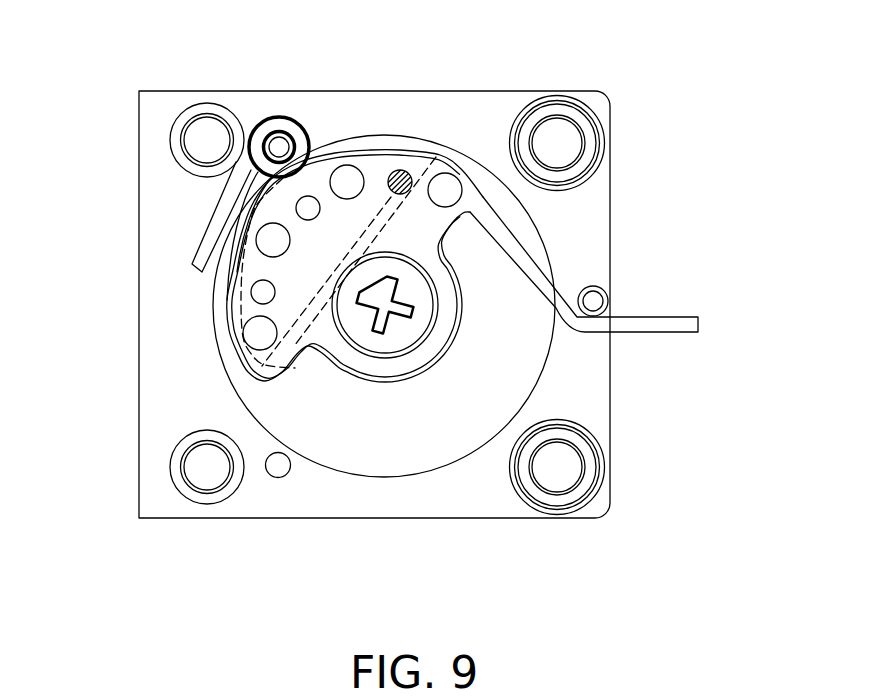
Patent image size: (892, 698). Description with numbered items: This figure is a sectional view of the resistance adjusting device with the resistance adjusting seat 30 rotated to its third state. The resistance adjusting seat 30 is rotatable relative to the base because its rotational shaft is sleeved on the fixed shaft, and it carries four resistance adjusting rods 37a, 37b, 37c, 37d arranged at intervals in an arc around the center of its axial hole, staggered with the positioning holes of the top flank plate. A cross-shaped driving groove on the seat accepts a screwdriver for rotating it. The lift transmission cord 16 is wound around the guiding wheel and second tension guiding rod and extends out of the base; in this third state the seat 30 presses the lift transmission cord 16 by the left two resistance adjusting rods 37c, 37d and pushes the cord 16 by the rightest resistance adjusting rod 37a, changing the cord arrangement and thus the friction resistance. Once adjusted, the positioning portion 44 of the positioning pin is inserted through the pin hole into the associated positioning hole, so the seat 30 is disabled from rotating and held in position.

The lift transmission cord 16 is at (670, 322).
The resistance adjusting seat 30 is at (277, 393).
The resistance adjusting rod 37a is at (445, 190).
The resistance adjusting rod 37b is at (345, 173).
The resistance adjusting rod 37c is at (270, 240).
The resistance adjusting rod 37d is at (259, 333).
The positioning portion 44 is at (403, 178).